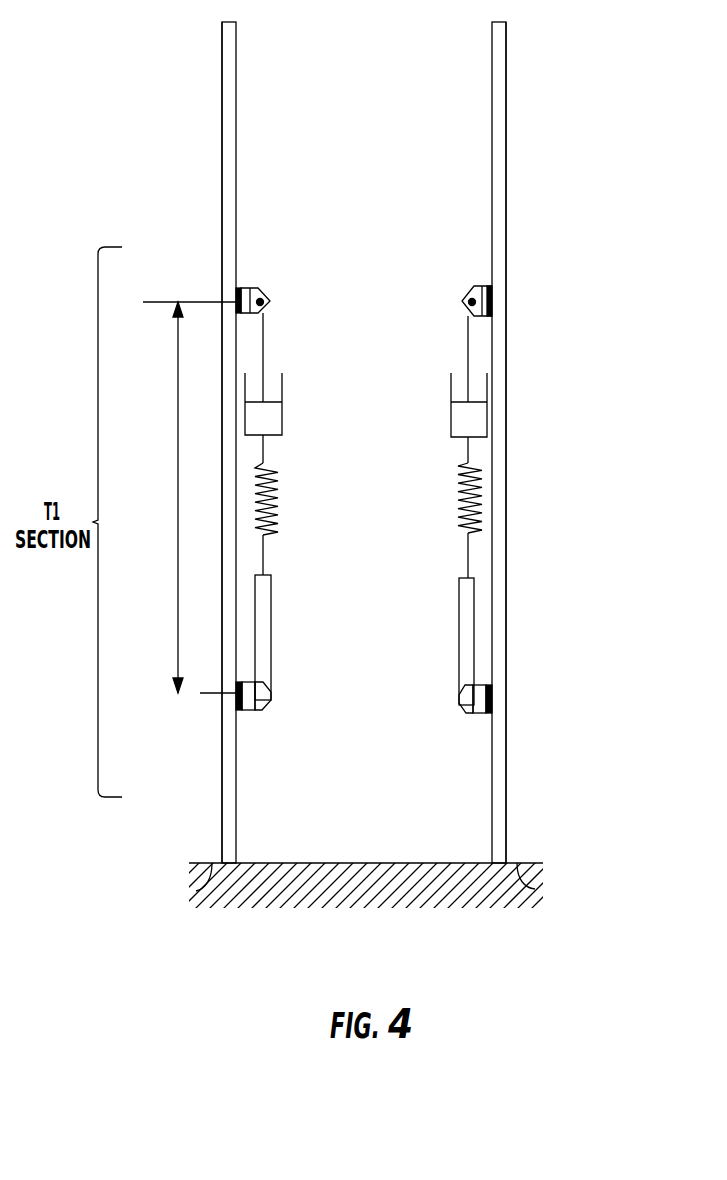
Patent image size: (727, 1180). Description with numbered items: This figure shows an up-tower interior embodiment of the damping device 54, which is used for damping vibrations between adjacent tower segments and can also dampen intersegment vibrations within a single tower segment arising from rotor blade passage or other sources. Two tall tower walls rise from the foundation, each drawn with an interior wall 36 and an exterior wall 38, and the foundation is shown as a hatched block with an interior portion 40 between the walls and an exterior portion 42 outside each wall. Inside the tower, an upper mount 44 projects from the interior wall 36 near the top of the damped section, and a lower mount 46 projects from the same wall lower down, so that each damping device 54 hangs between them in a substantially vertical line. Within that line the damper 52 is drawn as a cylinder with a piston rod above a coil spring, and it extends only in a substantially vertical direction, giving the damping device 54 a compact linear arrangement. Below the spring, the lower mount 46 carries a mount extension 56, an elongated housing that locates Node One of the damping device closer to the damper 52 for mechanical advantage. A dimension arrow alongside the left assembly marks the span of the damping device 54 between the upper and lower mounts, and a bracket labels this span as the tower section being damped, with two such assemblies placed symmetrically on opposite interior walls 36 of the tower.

The interior wall 36 is at (237, 797).
The exterior wall 38 is at (223, 826).
The interior portion of the tower foundation 40 is at (415, 863).
The exterior portion of the tower foundation 42 is at (196, 891).
The upper mount 44 is at (253, 291).
The lower mount 46 is at (250, 713).
The damper 52 is at (272, 414).
The damping device 54 is at (162, 440).
The mount extension 56 is at (263, 632).